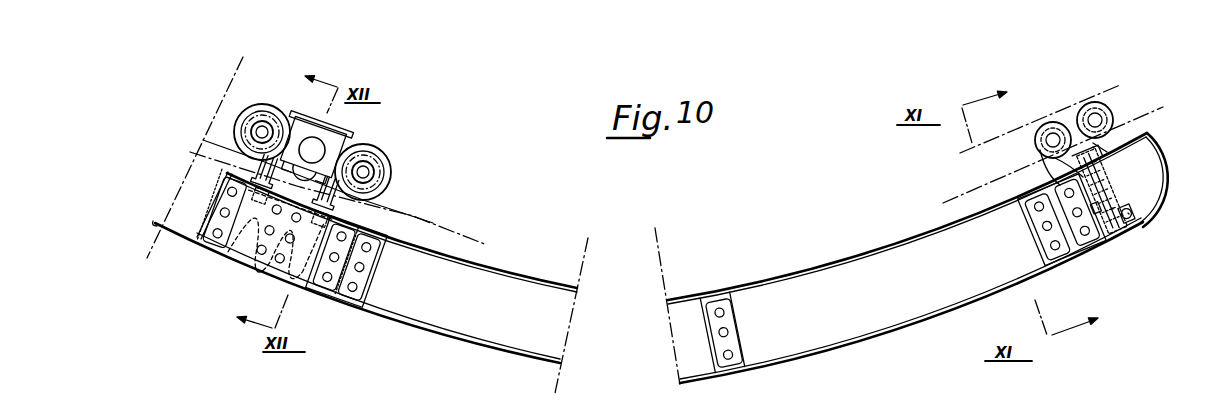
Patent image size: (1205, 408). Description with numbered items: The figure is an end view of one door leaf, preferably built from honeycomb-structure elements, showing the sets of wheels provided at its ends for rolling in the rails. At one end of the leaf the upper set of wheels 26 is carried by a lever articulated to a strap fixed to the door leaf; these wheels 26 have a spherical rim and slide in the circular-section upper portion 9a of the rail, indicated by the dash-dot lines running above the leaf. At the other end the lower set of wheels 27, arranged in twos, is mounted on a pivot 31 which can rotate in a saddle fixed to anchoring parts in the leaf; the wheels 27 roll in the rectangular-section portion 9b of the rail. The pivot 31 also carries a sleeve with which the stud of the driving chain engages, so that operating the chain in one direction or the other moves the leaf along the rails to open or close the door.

The circular-section upper portion of the rail 9a is at (950, 163).
The rectangular section portion of the rail 9b is at (420, 215).
The upper set of wheels 26 is at (1040, 147).
The lower set of wheels 27 is at (243, 111).
The pivot 31 is at (318, 146).